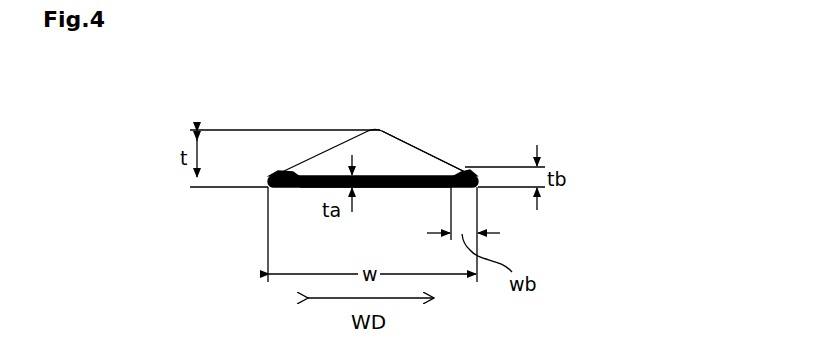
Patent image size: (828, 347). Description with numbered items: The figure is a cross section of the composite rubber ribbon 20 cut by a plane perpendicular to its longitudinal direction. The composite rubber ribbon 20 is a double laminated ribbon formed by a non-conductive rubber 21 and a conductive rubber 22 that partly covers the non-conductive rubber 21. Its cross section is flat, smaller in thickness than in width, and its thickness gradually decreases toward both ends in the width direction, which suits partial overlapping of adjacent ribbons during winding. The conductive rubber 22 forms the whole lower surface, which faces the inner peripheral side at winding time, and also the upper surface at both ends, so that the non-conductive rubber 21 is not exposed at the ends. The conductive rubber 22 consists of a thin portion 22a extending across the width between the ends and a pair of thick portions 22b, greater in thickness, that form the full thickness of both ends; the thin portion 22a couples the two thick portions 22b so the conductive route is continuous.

The composite rubber ribbon 20 is at (392, 135).
The non-conductive rubber 21 is at (423, 160).
The conductive rubber 22 is at (311, 189).
The thin portion 22a is at (397, 190).
The thick portion 22b is at (279, 174).